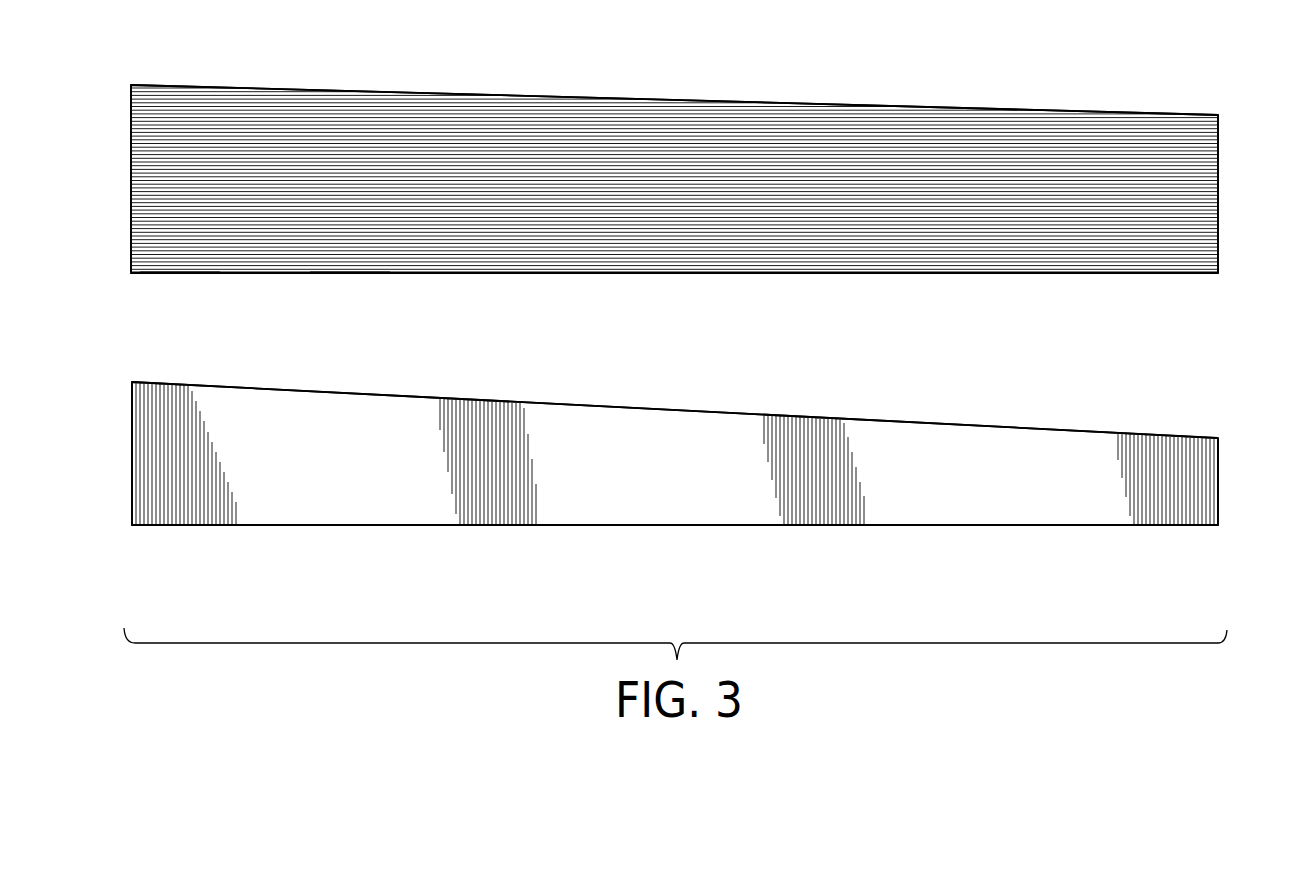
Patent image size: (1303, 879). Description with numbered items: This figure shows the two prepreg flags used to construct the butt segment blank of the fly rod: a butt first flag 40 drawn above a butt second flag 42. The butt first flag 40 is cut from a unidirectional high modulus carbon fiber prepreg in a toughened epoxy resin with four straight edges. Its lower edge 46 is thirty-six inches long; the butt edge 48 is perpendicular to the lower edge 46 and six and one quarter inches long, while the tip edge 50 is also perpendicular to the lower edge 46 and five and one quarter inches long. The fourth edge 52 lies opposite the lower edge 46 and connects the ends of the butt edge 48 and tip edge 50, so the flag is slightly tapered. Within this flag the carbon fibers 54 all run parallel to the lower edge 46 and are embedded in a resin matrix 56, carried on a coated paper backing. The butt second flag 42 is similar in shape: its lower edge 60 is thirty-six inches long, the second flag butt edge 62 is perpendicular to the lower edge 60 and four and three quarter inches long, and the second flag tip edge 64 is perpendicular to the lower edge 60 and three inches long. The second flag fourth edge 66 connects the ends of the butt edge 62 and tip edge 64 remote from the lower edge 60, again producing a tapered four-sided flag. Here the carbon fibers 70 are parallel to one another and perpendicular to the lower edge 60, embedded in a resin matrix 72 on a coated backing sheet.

The butt first flag 40 is at (382, 90).
The butt second flag 42 is at (412, 407).
The lower edge 46 is at (767, 272).
The butt edge 48 is at (131, 201).
The tip edge 50 is at (1218, 200).
The fourth edge 52 is at (953, 125).
The carbon fibers 54 is at (178, 255).
The resin matrix 56 is at (346, 255).
The lower edge 60 is at (770, 527).
The second flag butt edge 62 is at (131, 445).
The second flag tip edge 64 is at (1218, 485).
The second flag fourth edge 66 is at (957, 422).
The carbon fibers 70 is at (178, 508).
The resin matrix 72 is at (347, 510).